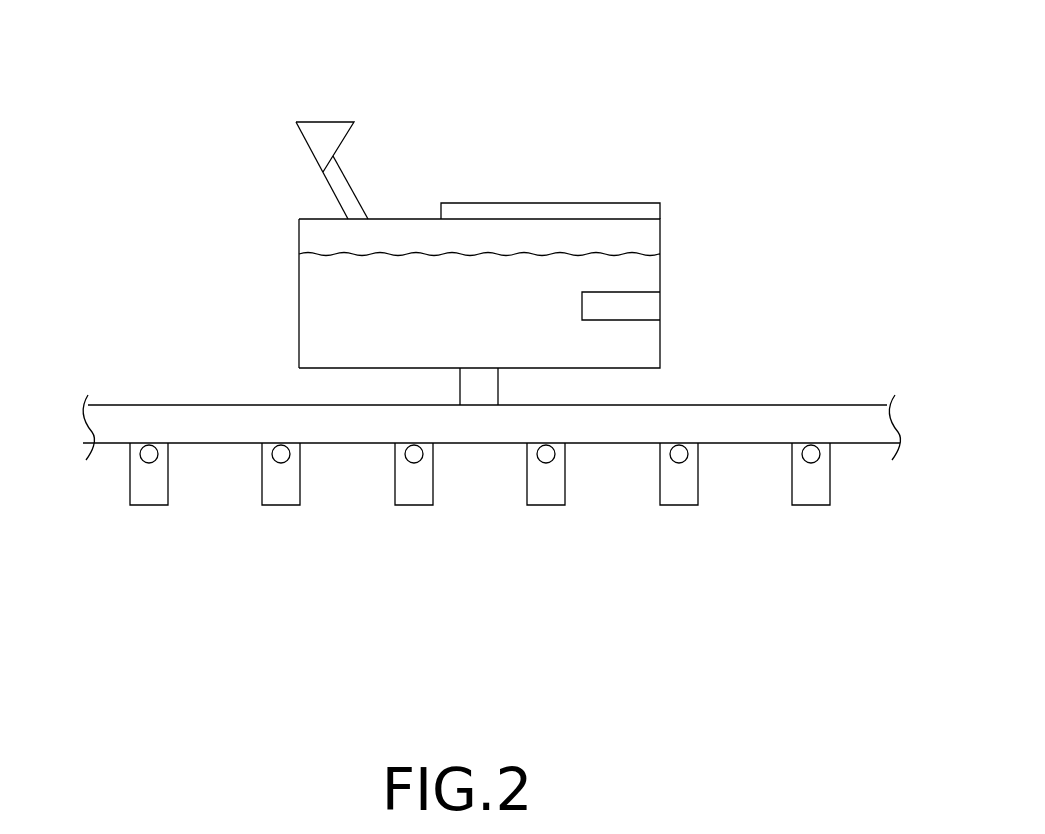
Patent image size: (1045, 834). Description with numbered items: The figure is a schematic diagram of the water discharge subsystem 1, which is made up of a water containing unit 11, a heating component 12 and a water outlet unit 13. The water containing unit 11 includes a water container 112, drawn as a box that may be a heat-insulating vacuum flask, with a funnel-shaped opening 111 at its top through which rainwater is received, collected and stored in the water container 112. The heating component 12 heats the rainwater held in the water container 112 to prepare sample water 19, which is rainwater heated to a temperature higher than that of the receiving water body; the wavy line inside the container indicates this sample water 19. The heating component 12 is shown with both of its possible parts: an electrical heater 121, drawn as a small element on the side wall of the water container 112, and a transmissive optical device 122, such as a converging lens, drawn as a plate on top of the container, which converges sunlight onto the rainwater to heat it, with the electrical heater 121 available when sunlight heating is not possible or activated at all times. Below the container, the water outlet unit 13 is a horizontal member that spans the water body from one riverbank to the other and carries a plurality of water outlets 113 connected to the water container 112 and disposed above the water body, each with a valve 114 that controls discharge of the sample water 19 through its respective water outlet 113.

The water discharge subsystem 1 is at (713, 167).
The water containing unit 11 is at (667, 242).
The opening 111 is at (327, 125).
The water container 112 is at (298, 242).
The heating component 12 is at (518, 197).
The electrical heater 121 is at (650, 308).
The transmissive optical device 122 is at (610, 207).
The sample water 19 is at (348, 293).
The water outlet unit 13 is at (853, 502).
The water outlets 113 is at (149, 497).
The valves 114 is at (128, 455).